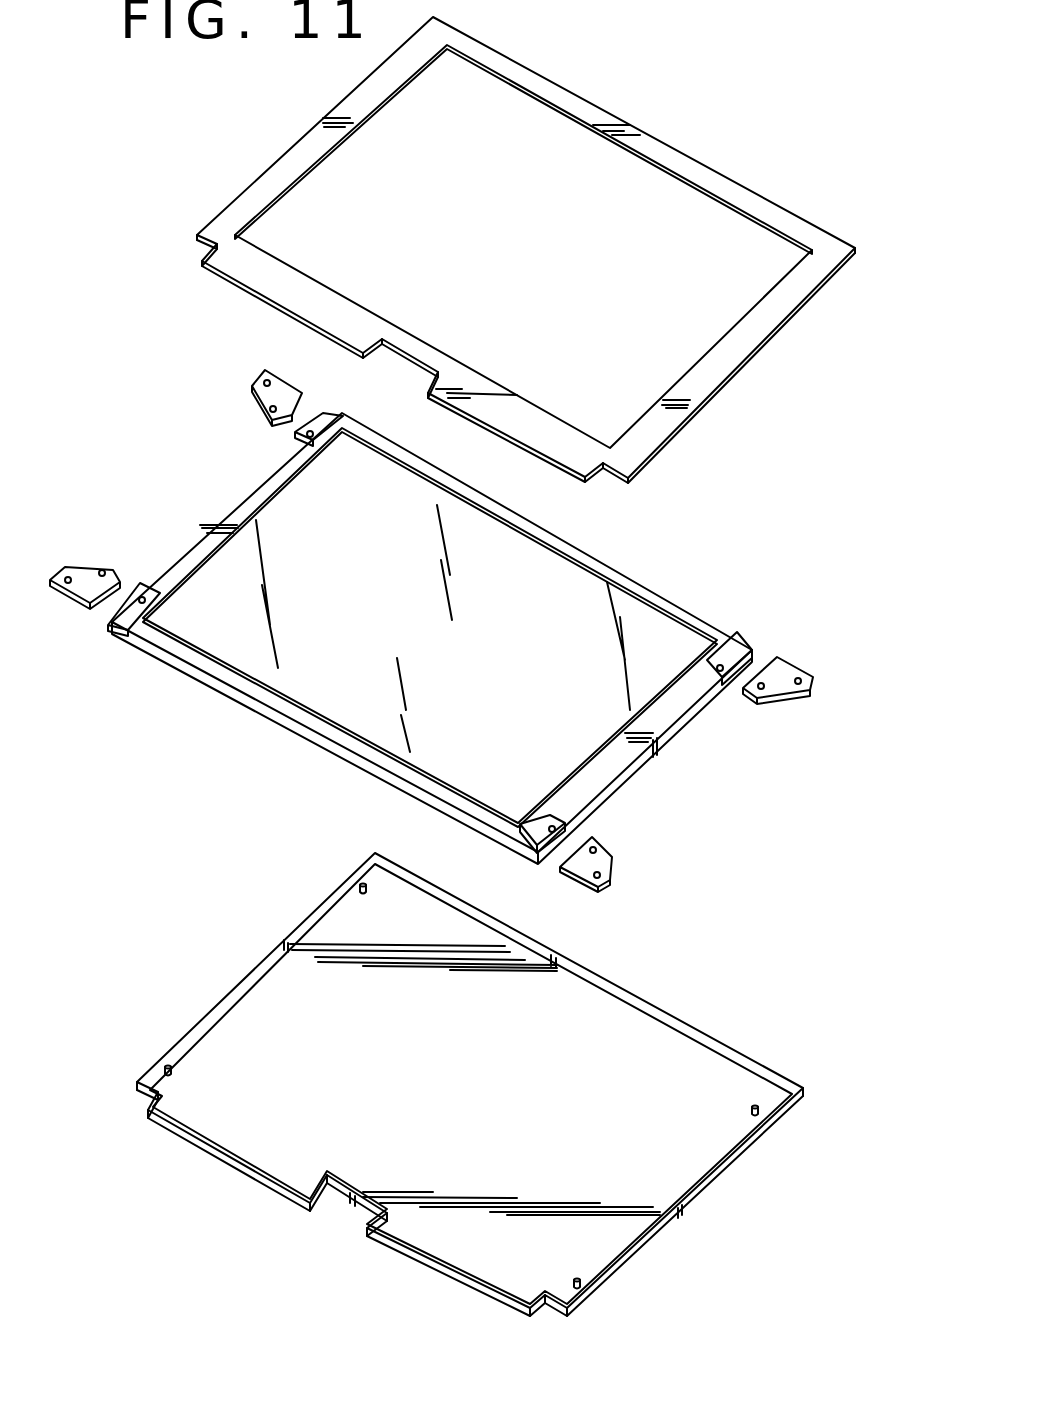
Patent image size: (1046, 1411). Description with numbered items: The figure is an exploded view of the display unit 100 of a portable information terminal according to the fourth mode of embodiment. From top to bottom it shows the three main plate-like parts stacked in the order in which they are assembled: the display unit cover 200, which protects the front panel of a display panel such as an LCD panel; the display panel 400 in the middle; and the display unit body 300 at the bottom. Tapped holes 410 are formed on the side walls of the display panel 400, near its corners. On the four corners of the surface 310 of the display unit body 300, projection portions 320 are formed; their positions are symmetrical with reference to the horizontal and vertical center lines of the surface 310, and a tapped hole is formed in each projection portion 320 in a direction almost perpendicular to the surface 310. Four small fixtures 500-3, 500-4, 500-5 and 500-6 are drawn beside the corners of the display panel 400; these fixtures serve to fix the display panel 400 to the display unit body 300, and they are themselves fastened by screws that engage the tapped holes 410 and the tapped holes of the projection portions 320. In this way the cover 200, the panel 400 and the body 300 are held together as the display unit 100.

The display unit 100 is at (735, 123).
The display unit cover 200 is at (732, 365).
The display unit body 300 is at (470, 1084).
The surface 310 is at (273, 1012).
The projection portions 320 is at (357, 900).
The display panel 400 is at (430, 665).
The tapped holes 410 is at (550, 834).
The fixture 500-3 is at (251, 390).
The fixture 500-4 is at (102, 565).
The fixture 500-5 is at (782, 690).
The fixture 500-6 is at (612, 853).